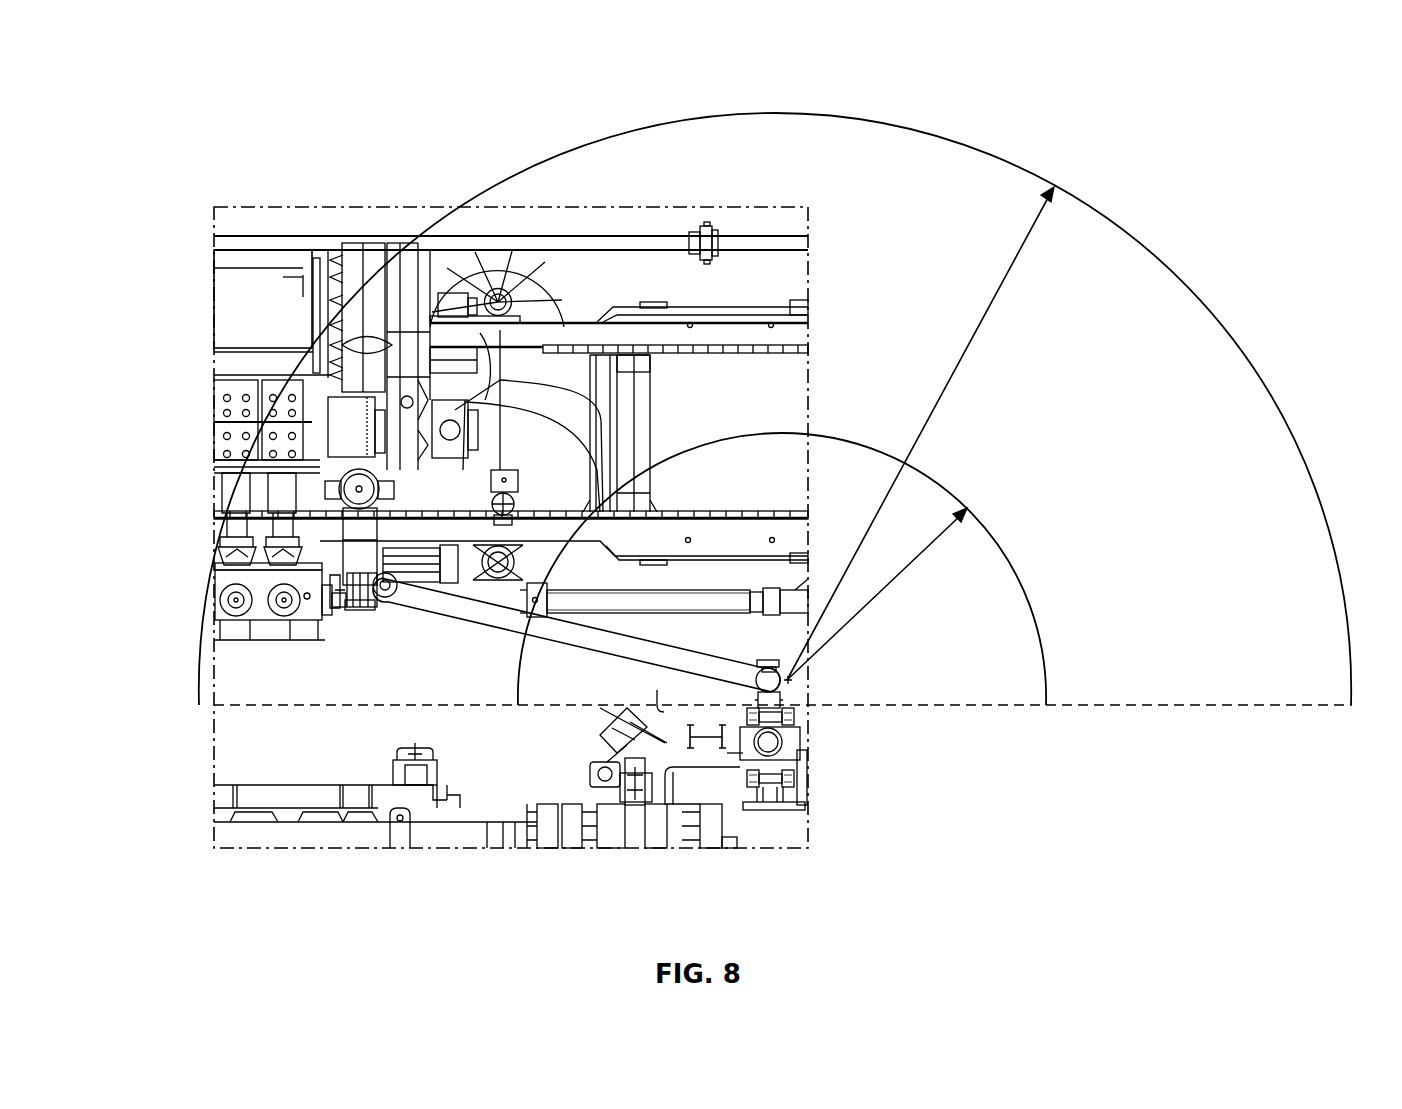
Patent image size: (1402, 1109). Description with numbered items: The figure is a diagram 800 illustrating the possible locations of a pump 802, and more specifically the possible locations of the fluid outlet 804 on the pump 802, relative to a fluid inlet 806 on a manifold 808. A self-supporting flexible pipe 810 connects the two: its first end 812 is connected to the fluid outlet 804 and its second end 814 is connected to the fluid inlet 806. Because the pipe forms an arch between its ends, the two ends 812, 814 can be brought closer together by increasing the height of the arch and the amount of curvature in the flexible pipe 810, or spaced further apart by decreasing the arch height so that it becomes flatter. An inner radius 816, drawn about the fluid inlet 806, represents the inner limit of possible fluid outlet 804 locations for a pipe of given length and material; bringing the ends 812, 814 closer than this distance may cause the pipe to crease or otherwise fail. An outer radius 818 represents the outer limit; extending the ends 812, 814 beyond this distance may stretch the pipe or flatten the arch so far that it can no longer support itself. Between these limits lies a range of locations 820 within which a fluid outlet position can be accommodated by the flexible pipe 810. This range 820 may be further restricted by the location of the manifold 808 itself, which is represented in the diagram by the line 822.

The diagram 800 is at (142, 104).
The pump 802 is at (183, 406).
The fluid outlet 804 is at (376, 594).
The fluid inlet 806 is at (792, 702).
The manifold 808 is at (722, 858).
The self-supporting flexible pipe 810 is at (487, 623).
The first end 812 is at (378, 672).
The second end 814 is at (713, 690).
The inner radius 816 is at (869, 590).
The outer radius 818 is at (971, 338).
The range of locations 820 is at (1226, 362).
The line 822 is at (1304, 706).